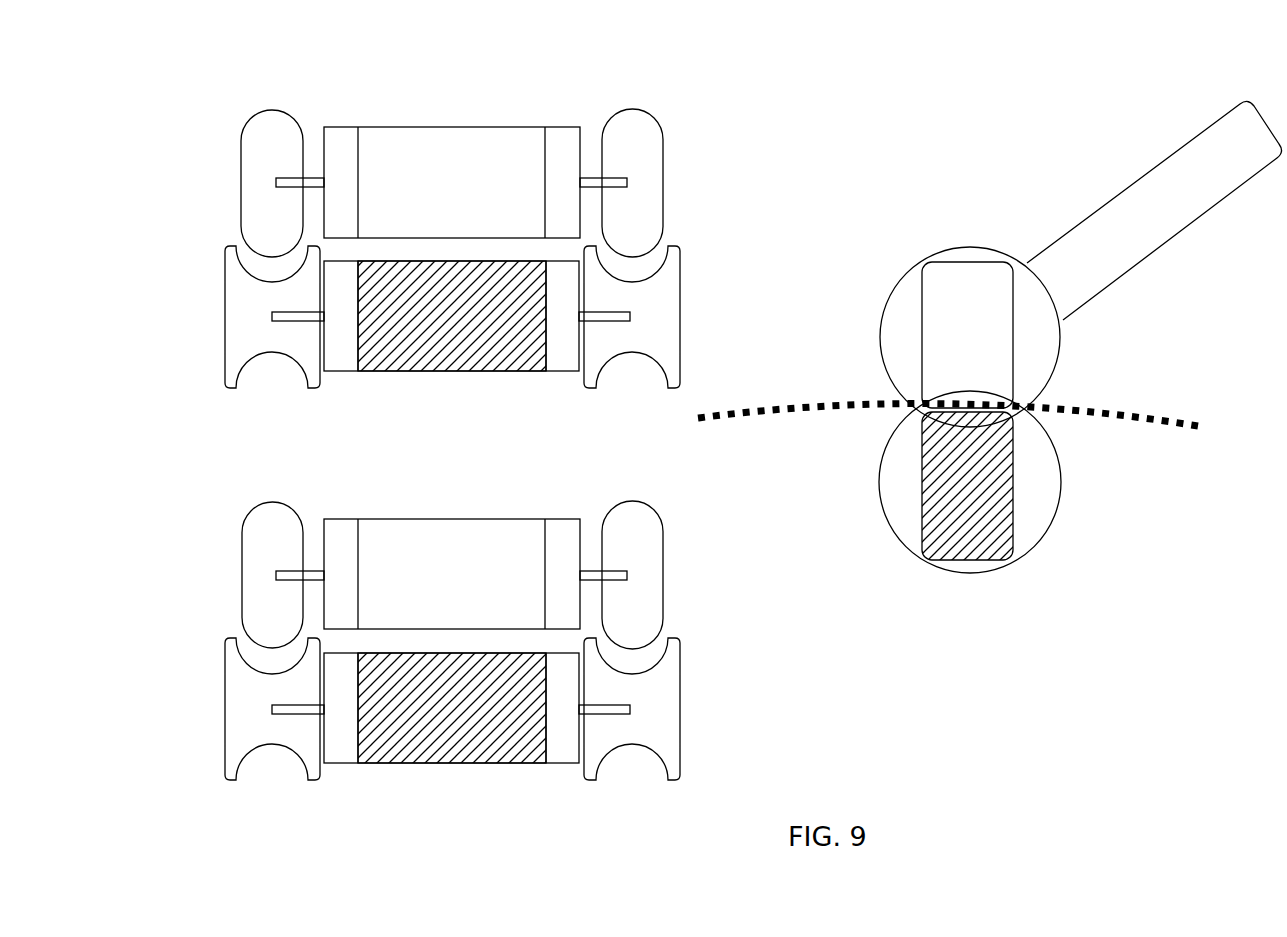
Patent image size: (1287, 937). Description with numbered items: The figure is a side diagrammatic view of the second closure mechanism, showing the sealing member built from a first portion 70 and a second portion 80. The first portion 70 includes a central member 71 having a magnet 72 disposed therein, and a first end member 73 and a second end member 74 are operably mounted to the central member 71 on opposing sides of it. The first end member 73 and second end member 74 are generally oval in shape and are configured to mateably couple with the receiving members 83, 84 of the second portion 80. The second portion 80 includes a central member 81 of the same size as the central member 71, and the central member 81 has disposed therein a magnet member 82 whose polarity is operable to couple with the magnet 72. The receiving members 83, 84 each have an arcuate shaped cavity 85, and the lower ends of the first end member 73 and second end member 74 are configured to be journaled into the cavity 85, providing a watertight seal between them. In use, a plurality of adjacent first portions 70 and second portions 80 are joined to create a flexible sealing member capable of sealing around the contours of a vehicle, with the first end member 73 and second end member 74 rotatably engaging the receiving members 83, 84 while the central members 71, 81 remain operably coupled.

The first portion 70 is at (218, 190).
The central member 71 is at (557, 127).
The magnet 72 is at (447, 153).
The first end member 73 is at (640, 132).
The second end member 74 is at (262, 137).
The second portion 80 is at (207, 317).
The central member 81 is at (340, 358).
The magnet member 82 is at (482, 348).
The receiving member 83 is at (655, 299).
The receiving member 84 is at (243, 342).
The arcuate shaped cavity 85 is at (636, 268).